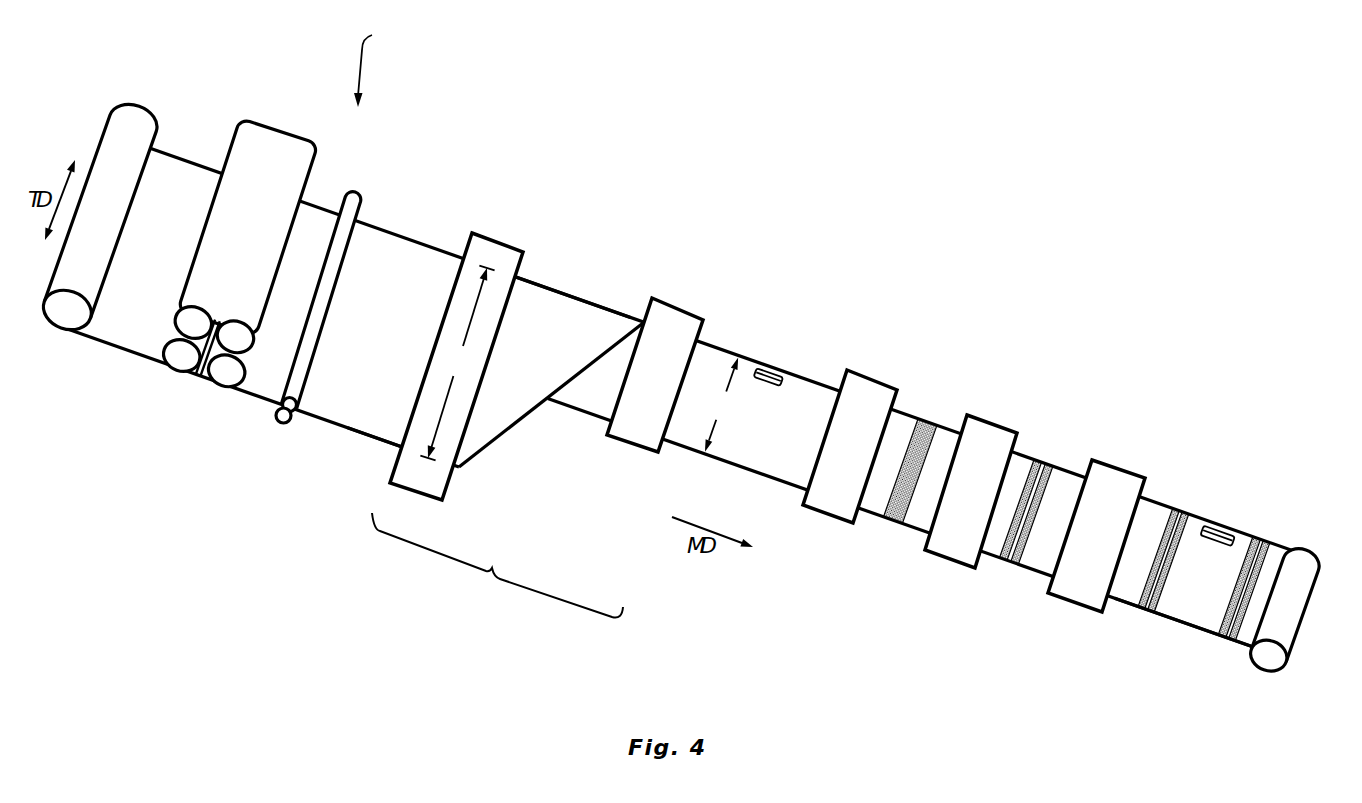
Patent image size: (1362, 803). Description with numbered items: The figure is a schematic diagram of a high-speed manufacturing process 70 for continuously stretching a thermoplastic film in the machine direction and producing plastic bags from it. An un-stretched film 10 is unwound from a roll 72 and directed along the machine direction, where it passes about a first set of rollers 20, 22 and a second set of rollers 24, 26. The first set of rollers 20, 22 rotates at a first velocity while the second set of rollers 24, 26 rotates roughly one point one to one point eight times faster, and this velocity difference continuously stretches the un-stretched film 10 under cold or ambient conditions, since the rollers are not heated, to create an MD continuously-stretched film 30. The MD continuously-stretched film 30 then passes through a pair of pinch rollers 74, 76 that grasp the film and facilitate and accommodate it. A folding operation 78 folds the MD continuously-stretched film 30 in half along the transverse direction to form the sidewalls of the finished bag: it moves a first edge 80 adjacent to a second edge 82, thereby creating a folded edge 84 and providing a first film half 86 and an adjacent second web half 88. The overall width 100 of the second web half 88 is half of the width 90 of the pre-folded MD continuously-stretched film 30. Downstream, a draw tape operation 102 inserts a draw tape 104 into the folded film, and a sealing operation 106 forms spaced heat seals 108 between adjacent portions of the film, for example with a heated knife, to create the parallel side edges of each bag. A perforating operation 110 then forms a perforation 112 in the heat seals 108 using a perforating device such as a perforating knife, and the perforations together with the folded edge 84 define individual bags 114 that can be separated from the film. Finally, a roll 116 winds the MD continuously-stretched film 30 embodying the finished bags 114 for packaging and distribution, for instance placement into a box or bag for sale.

The un-stretched film 10 is at (175, 167).
The first set of rollers 20 is at (176, 358).
The first set of rollers 22 is at (175, 325).
The second set of rollers 24 is at (218, 347).
The second set of rollers 26 is at (220, 380).
The MD continuously-stretched film 30 is at (415, 250).
The high-speed manufacturing process 70 is at (374, 68).
The roll 72 is at (137, 103).
The pinch roller 74 is at (297, 424).
The pinch roller 76 is at (290, 425).
The folding operation 78 is at (497, 565).
The first edge 80 is at (380, 443).
The second edge 82 is at (440, 247).
The folded edge 84 is at (563, 403).
The first film half 86 is at (553, 300).
The second web half 88 is at (597, 387).
The width 90 is at (457, 363).
The overall width 100 is at (722, 404).
The draw tape operation 102 is at (680, 308).
The draw tape 104 is at (768, 364).
The sealing operation 106 is at (828, 503).
The heat seals 108 is at (893, 518).
The perforating operation 110 is at (958, 552).
The perforation 112 is at (1042, 462).
The individual bags 114 is at (1192, 618).
The roll 116 is at (1300, 558).